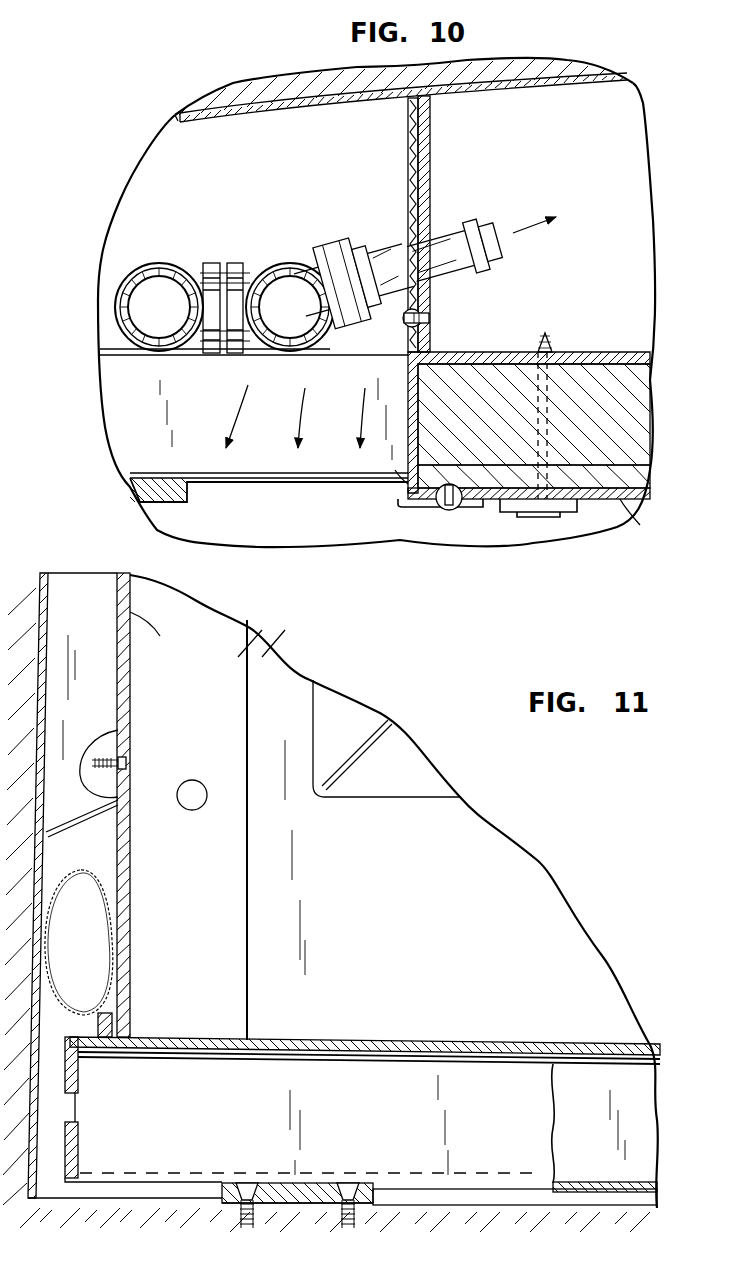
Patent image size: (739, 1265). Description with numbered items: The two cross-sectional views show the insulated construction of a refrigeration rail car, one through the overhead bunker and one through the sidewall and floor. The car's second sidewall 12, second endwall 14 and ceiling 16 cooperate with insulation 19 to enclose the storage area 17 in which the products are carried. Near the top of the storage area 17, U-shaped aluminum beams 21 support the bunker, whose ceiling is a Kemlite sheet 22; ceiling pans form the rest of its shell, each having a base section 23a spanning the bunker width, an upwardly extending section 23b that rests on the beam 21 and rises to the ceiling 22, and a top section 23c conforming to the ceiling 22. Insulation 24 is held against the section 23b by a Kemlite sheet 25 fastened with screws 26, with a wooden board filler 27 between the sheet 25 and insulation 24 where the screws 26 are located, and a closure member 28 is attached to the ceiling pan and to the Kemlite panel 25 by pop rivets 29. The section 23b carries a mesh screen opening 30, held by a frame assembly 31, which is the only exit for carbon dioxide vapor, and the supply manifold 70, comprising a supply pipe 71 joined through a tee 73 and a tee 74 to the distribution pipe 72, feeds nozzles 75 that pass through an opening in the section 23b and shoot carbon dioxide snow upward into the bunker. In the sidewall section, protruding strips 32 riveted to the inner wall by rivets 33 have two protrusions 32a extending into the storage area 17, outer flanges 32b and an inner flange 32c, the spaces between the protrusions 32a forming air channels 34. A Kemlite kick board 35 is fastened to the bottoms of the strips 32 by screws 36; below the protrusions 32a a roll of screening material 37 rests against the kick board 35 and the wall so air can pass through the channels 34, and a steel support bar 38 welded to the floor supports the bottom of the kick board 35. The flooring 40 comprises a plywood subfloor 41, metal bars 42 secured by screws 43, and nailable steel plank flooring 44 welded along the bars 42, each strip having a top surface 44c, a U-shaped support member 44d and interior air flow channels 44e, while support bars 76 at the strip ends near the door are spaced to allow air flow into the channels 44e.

In FIG. 11, the second sidewall 12 is at (44, 842).
In FIG. 11, the second endwall 14 is at (500, 832).
In FIG. 10, the ceiling 16 is at (236, 82).
In FIG. 11, the storage area 17 is at (475, 905).
In FIG. 10, the insulation 19 is at (290, 90).
In FIG. 10, the U-shaped aluminum beam 21 is at (250, 470).
In FIG. 10, the bunker ceiling 22 is at (593, 84).
In FIG. 10, the base section 23a is at (612, 350).
In FIG. 10, the upwardly extending section 23b is at (432, 133).
In FIG. 10, the top section 23c is at (350, 116).
In FIG. 10, the insulation 24 is at (635, 438).
In FIG. 10, the Kemlite sheet 25 is at (624, 505).
In FIG. 10, the screw 26 is at (553, 338).
In FIG. 10, the wooden board filler 27 is at (640, 488).
In FIG. 10, the closure member 28 is at (405, 482).
In FIG. 10, the pop rivet 29 is at (430, 316).
In FIG. 10, the mesh screen opening 30 is at (400, 195).
In FIG. 10, the frame assembly 31 is at (406, 128).
In FIG. 11, the protruding strip 32 is at (133, 596).
In FIG. 11, the protrusion section 32a is at (132, 612).
In FIG. 11, the flange 32b is at (281, 822).
In FIG. 11, the inner flange 32c is at (70, 570).
In FIG. 11, the rivet 33 is at (194, 812).
In FIG. 11, the channel 34 is at (80, 622).
In FIG. 11, the kick board 35 is at (130, 762).
In FIG. 11, the screw 36 is at (132, 689).
In FIG. 11, the screening material 37 is at (78, 870).
In FIG. 11, the support bar 38 is at (110, 1020).
In FIG. 11, the flooring 40 is at (500, 1030).
In FIG. 11, the plywood subfloor 41 is at (468, 1205).
In FIG. 11, the metal bar 42 is at (313, 1192).
In FIG. 11, the screw 43 is at (247, 1184).
In FIG. 11, the nailable steel plank flooring 44 is at (450, 1039).
In FIG. 11, the top surface 44c is at (384, 1038).
In FIG. 11, the U-shaped support member 44d is at (312, 1092).
In FIG. 11, the air flow channel 44e is at (520, 1100).
In FIG. 10, the supply manifold 70 is at (206, 193).
In FIG. 10, the supply pipe 71 is at (157, 263).
In FIG. 10, the distribution pipe 72 is at (285, 268).
In FIG. 10, the tee 73 is at (197, 265).
In FIG. 10, the tee 74 is at (254, 268).
In FIG. 10, the nozzle 75 is at (505, 255).
In FIG. 11, the support bar 76 is at (80, 1088).